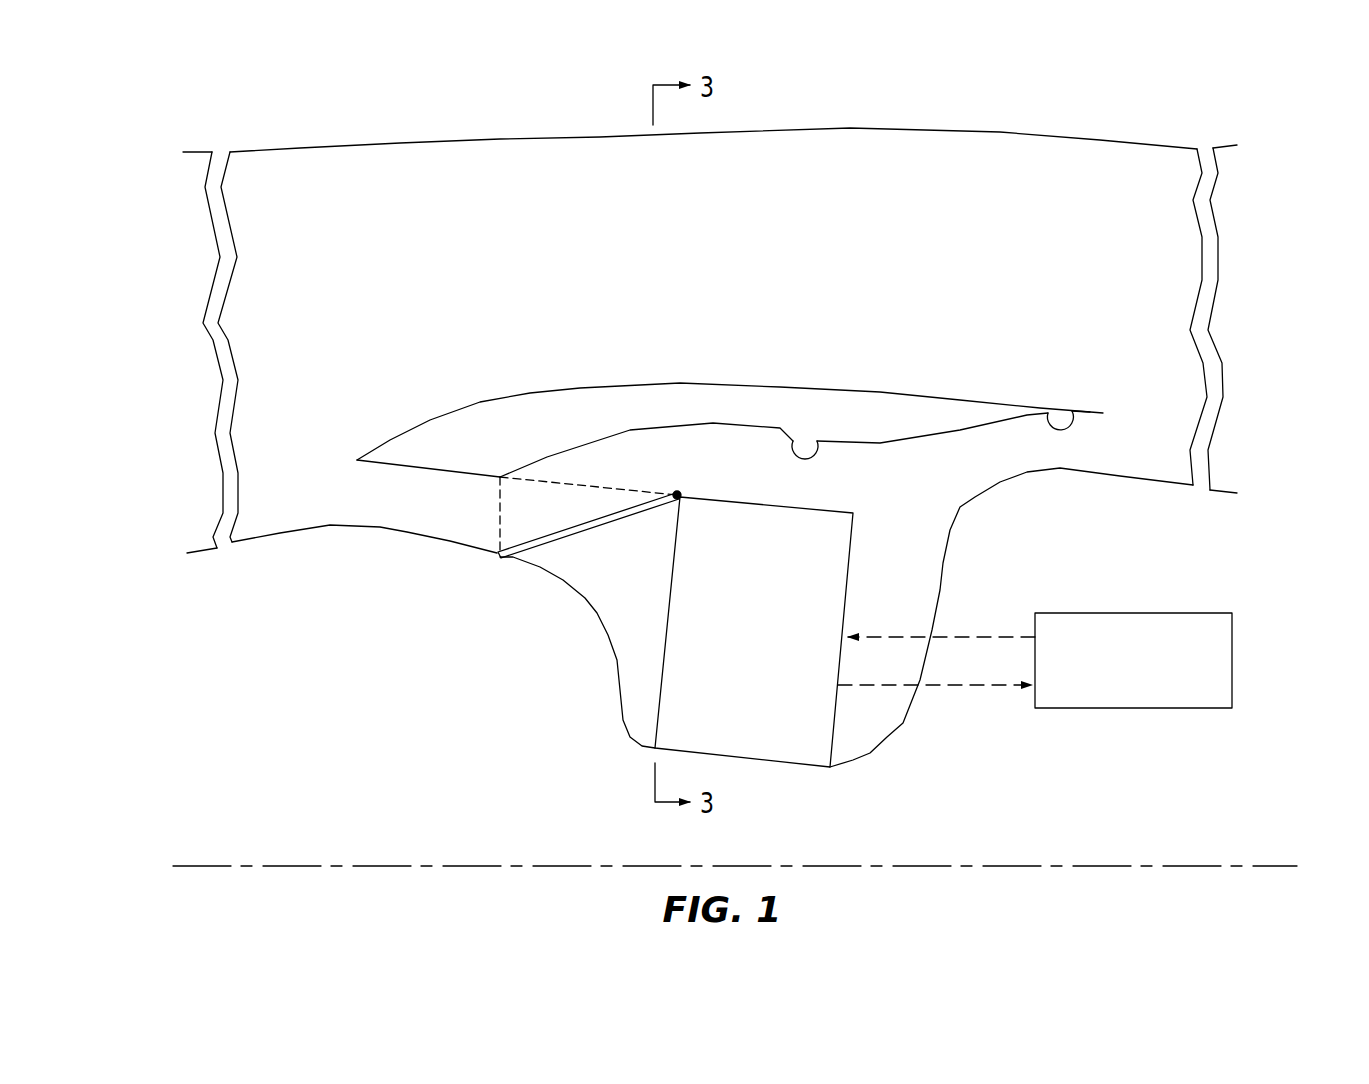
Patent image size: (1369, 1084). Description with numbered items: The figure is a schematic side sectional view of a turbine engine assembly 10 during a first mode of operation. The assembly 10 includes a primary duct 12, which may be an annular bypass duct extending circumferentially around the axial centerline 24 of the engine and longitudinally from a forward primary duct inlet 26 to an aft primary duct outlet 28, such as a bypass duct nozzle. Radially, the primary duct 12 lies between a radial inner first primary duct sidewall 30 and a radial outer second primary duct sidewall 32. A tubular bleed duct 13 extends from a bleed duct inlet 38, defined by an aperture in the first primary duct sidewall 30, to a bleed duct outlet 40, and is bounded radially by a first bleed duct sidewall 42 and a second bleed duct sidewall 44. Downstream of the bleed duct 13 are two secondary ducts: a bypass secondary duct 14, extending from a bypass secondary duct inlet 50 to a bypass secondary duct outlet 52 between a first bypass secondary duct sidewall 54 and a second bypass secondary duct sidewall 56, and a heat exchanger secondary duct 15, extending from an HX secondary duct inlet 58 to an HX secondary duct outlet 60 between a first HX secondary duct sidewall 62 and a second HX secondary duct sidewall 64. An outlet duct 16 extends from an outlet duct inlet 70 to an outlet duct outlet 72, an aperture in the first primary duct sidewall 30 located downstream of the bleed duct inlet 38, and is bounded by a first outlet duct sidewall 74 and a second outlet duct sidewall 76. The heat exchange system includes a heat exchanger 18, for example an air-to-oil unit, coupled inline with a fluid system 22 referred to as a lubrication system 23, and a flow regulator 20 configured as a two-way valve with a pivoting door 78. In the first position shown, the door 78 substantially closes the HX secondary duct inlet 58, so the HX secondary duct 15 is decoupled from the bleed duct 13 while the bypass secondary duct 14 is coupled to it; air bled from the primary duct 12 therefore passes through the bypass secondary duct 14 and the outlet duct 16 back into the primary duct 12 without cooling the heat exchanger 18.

The turbine engine assembly 10 is at (142, 202).
The primary duct 12 is at (707, 262).
The bleed duct 13 is at (393, 512).
The bypass secondary duct 14 is at (695, 473).
The HX secondary duct 15 is at (622, 608).
The outlet duct 16 is at (998, 457).
The heat exchanger 18 is at (833, 740).
The flow regulator 20 is at (577, 550).
The fluid system 22 is at (1236, 655).
The lubrication system 23 is at (1125, 708).
The axial centerline 24 is at (1293, 865).
The primary duct inlet 26 is at (166, 544).
The primary duct outlet 28 is at (1258, 482).
The vertical first primary duct sidewall 30 is at (202, 553).
The vertical second primary duct sidewall 32 is at (202, 152).
The bleed duct inlet 38 is at (346, 471).
The bleed duct outlet 40 is at (487, 534).
The vertical first bleed duct sidewall 42 is at (403, 530).
The vertical second bleed duct sidewall 44 is at (430, 467).
The bypass secondary duct inlet 50 is at (637, 486).
The bypass secondary duct outlet 52 is at (893, 471).
The vertical first bypass secondary duct sidewall 54 is at (823, 507).
The vertical second bypass secondary duct sidewall 56 is at (803, 437).
The HX secondary duct inlet 58 is at (609, 542).
The HX secondary duct outlet 60 is at (916, 537).
The vertical first HX secondary duct sidewall 62 is at (717, 753).
The vertical second HX secondary duct sidewall 64 is at (760, 510).
The outlet duct inlet 70 is at (933, 488).
The outlet duct outlet 72 is at (1107, 446).
The vertical first outlet duct sidewall 74 is at (1037, 472).
The vertical second outlet duct sidewall 76 is at (1073, 410).
The door 78 is at (567, 527).